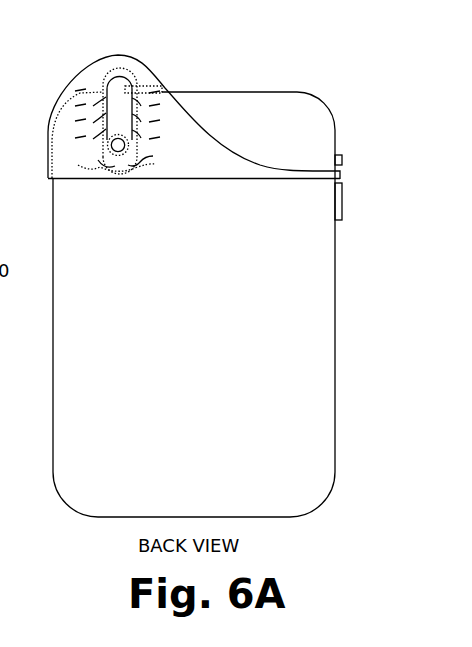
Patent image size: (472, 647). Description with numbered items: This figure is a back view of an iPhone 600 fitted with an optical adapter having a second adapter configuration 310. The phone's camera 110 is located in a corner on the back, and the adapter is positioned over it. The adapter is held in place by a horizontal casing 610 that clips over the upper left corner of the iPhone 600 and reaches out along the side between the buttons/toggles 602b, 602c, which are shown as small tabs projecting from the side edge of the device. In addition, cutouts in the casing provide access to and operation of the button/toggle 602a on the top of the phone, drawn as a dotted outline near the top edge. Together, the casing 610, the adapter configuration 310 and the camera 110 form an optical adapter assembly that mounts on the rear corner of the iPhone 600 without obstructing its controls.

The second adapter configuration 310 is at (150, 53).
The iPhone 600 is at (335, 285).
The horizontal casing 610 is at (85, 79).
The button/toggle 602a is at (153, 84).
The button/toggle 602b is at (342, 160).
The button/toggle 602c is at (342, 197).
The camera 110 is at (107, 150).